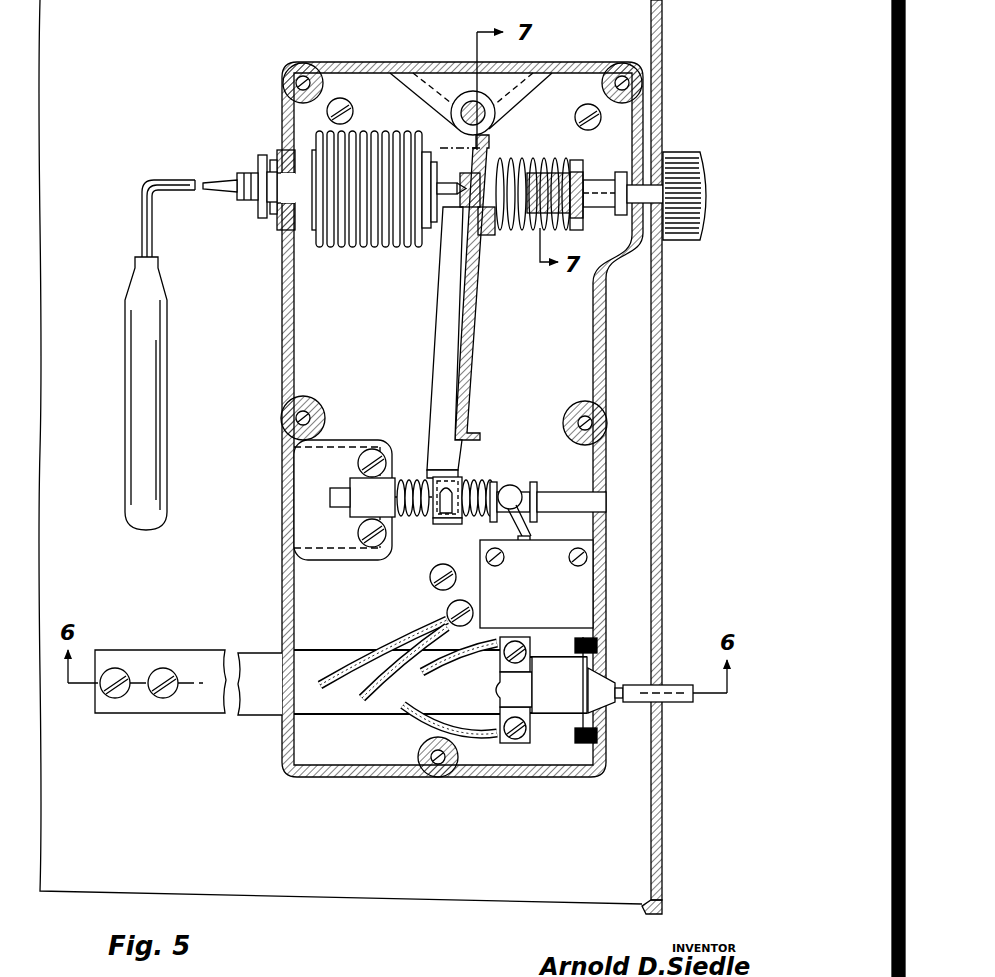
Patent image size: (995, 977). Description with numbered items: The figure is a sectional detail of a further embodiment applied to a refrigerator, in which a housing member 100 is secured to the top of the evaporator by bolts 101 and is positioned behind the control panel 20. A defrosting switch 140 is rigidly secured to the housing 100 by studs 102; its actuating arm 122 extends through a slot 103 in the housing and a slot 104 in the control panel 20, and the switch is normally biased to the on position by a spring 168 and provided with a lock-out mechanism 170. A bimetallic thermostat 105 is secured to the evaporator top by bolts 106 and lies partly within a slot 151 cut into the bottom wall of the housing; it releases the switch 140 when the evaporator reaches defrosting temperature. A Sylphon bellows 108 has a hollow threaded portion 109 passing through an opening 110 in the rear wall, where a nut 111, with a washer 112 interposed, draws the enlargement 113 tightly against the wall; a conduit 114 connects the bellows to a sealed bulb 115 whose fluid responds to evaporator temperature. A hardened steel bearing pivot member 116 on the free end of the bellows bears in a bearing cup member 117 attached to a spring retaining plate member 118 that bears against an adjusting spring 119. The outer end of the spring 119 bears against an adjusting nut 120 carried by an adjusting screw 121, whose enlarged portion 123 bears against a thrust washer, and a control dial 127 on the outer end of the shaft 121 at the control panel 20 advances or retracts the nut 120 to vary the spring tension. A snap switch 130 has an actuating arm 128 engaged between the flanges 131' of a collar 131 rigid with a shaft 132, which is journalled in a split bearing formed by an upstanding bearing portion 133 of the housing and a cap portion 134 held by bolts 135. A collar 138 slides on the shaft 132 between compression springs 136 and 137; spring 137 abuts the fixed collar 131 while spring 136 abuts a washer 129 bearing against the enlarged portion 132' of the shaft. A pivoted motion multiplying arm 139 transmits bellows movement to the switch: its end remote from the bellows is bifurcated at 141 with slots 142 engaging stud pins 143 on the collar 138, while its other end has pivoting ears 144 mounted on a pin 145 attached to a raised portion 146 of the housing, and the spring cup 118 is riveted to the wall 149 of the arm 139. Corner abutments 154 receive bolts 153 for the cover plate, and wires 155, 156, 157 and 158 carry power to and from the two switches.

The control panel 20 is at (663, 530).
The housing member 100 is at (282, 600).
The bolts 101 is at (340, 98).
The studs 102 is at (598, 645).
The slot 103 is at (600, 672).
The slot 104 is at (656, 680).
The bimetallic thermostat 105 is at (258, 655).
The bolts 106 is at (115, 668).
The Sylphon bellows 108 is at (335, 248).
The threaded portion 109 is at (247, 202).
The opening 110 is at (278, 222).
The nut 111 is at (258, 163).
The washer 112 is at (273, 158).
The enlargement 113 is at (305, 160).
The conduit 114 is at (142, 222).
The sealed bulb 115 is at (136, 500).
The bearing pivot member 116 is at (447, 185).
The bearing cup member 117 is at (459, 207).
The spring retaining plate member 118 is at (488, 236).
The adjusting spring 119 is at (524, 220).
The adjusting nut 120 is at (577, 160).
The adjusting screw 121 is at (592, 165).
The actuating arm 122 is at (678, 703).
The enlarged portion 123 is at (621, 218).
The control dial 127 is at (685, 242).
The actuating arm 128 is at (512, 528).
The washer 129 is at (412, 476).
The snap switch 130 is at (536, 584).
The collar 131 is at (514, 484).
The flanges 131' is at (524, 464).
The shaft 132 is at (571, 482).
The enlarged portion 132' is at (343, 495).
The bracket 133 is at (343, 500).
The cap portion 134 is at (368, 490).
The bolts 135 is at (372, 548).
The compression spring 136 is at (420, 518).
The compression spring 137 is at (472, 516).
The collar 138 is at (446, 520).
The motion multiplying arm 139 is at (435, 373).
The defrosting switch 140 is at (522, 690).
The bifurcated end 141 is at (440, 455).
The slot 142 is at (452, 482).
The stud pins 143 is at (435, 524).
The pivoting ears 144 is at (455, 95).
The pin 145 is at (472, 100).
The raised portion 146 is at (518, 90).
The wall 149 is at (476, 343).
The slot 151 is at (310, 650).
The bolts 153 is at (298, 80).
The corner abutments 154 is at (322, 75).
The supply wire 155 is at (422, 720).
The wire 156 is at (447, 663).
The supply wire 157 is at (380, 700).
The wire 158 is at (350, 685).
The spring 168 is at (583, 680).
The lock-out mechanism 170 is at (616, 700).